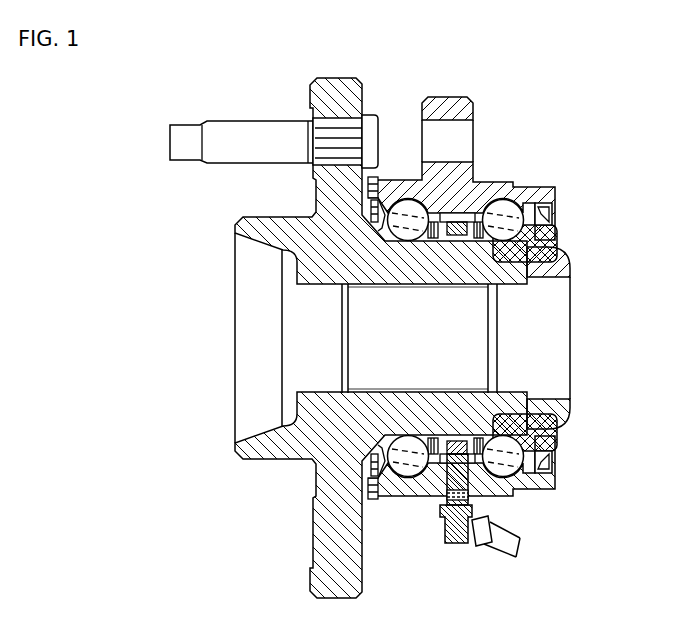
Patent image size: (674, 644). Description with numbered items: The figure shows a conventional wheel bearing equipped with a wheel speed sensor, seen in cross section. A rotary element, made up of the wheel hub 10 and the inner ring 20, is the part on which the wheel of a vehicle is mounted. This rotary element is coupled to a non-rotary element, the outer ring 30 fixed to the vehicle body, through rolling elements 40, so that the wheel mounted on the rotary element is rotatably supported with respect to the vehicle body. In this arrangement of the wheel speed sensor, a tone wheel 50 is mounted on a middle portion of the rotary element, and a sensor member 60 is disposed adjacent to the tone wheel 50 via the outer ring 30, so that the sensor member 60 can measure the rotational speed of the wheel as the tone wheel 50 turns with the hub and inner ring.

The wheel hub 10 is at (265, 223).
The inner ring 20 is at (552, 232).
The outer ring 30 is at (483, 192).
The rolling elements 40 is at (457, 285).
The tone wheel 50 is at (497, 390).
The sensor member 60 is at (490, 470).